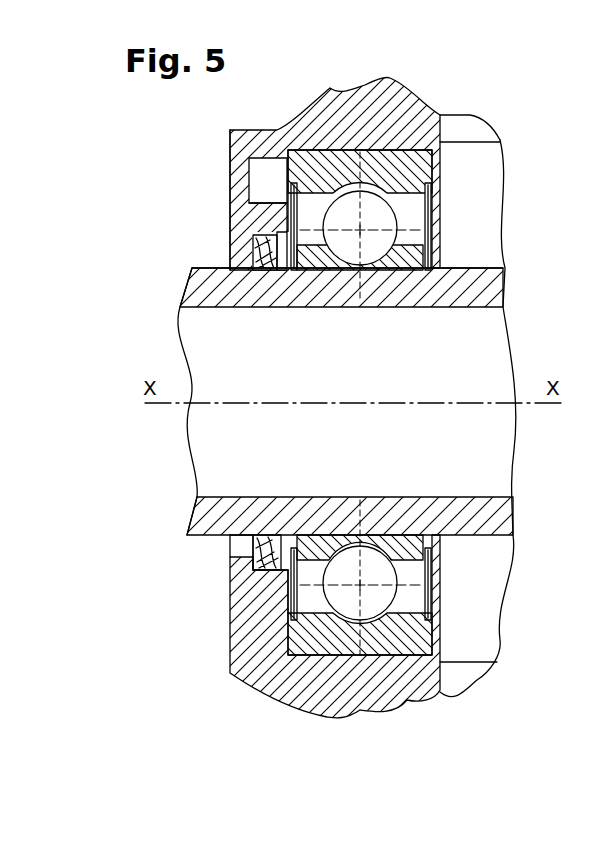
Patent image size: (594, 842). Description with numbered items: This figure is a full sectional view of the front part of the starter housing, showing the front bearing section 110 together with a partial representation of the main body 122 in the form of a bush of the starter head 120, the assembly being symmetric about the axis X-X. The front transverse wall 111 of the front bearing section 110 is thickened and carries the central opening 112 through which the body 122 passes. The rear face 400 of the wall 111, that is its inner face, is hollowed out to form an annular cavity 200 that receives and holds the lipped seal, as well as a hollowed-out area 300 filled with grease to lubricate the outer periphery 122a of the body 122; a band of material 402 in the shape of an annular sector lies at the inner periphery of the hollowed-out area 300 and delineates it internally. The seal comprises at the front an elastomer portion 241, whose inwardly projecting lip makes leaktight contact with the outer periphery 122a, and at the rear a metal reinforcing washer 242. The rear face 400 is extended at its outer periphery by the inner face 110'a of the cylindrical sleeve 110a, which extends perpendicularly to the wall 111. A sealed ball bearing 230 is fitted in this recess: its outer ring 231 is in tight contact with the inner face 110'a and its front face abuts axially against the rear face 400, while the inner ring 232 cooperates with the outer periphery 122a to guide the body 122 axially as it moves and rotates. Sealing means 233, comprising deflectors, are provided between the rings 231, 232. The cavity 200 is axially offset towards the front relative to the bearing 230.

The front bearing section 110 is at (335, 663).
The cylindrical sleeve 110a is at (378, 118).
The inner face of the cylindrical sleeve 110'a is at (488, 376).
The front transverse wall 111 is at (230, 153).
The opening 112 is at (243, 542).
The starter head 120 is at (166, 300).
The main body 122 is at (480, 290).
The outer periphery of the main body 122a is at (478, 267).
The annular cavity 200 is at (257, 566).
The bearing 230 is at (418, 166).
The outer ring 231 is at (438, 631).
The inner ring 232 is at (408, 545).
The sealing means 233 is at (437, 226).
The elastomer portion 241 is at (252, 257).
The metal reinforcing washer 242 is at (290, 548).
The hollowed-out area 300 is at (267, 186).
The rear face 400 is at (305, 600).
The band of material 402 is at (267, 222).